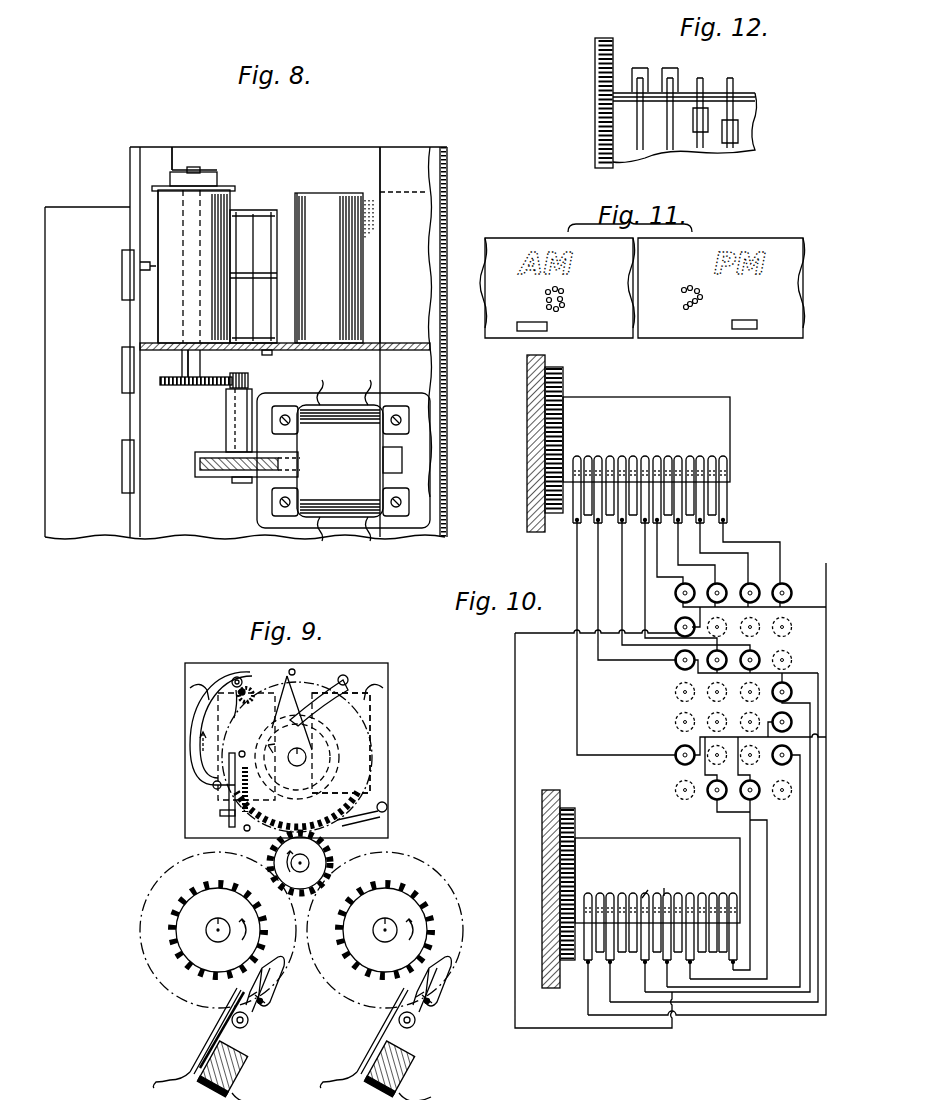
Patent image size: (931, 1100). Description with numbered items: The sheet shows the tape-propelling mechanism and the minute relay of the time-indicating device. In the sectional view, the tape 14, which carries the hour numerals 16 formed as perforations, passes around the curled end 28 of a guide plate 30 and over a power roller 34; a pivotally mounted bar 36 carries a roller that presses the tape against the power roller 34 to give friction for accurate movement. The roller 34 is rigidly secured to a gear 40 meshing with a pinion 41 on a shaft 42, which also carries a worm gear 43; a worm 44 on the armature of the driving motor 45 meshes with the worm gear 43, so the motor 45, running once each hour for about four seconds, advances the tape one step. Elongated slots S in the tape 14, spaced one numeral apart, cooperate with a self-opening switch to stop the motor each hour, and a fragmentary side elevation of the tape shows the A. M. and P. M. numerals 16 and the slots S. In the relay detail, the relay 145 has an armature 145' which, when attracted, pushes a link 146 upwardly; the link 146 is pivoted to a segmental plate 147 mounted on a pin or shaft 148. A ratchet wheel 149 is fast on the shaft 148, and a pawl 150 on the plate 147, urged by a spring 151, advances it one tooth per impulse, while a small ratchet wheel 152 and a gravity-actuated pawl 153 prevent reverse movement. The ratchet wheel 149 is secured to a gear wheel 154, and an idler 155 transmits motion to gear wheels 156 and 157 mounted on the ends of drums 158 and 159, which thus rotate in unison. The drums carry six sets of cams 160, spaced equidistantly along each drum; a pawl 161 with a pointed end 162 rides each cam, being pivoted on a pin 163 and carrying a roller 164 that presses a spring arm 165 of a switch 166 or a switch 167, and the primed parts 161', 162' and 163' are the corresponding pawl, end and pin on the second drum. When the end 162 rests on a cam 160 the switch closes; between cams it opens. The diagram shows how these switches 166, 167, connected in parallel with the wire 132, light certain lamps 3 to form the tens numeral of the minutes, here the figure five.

In FIG. 8, the tape 14 is at (158, 233).
In FIG. 11, the tape 14 is at (772, 242).
In FIG. 11, the numerals 16 is at (563, 298).
In FIG. 8, the curled end 28 is at (332, 202).
In FIG. 8, the guide plate 30 is at (381, 301).
In FIG. 8, the power roller 34 is at (160, 197).
In FIG. 8, the pivotally mounted bar 36 is at (217, 168).
In FIG. 8, the gear 40 is at (203, 386).
In FIG. 8, the pinion 41 is at (247, 384).
In FIG. 8, the shaft 42 is at (232, 427).
In FIG. 8, the worm gear 43 is at (210, 473).
In FIG. 8, the worm 44 is at (233, 483).
In FIG. 8, the driving motor 45 is at (343, 460).
In FIG. 10, the lamps 3 is at (666, 689).
In FIG. 10, the wire 132 is at (826, 568).
In FIG. 9, the relay 145 is at (368, 743).
In FIG. 9, the armature 145' is at (369, 806).
In FIG. 9, the link 146 is at (226, 807).
In FIG. 9, the segmental plate 147 is at (206, 768).
In FIG. 9, the pin or shaft 148 is at (307, 757).
In FIG. 9, the ratchet wheel 149 is at (314, 678).
In FIG. 9, the pawl 150 is at (236, 679).
In FIG. 9, the spring 151 is at (244, 683).
In FIG. 9, the small ratchet wheel 152 is at (330, 729).
In FIG. 9, the gravity-actuated pawl 153 is at (343, 680).
In FIG. 9, the gear wheel 154 is at (335, 822).
In FIG. 9, the idler 155 is at (331, 844).
In FIG. 9, the gear wheel 156 is at (308, 955).
In FIG. 10, the gear wheel 156 is at (561, 389).
In FIG. 12, the gear wheel 156 is at (596, 151).
In FIG. 9, the gear wheel 157 is at (343, 992).
In FIG. 10, the gear wheel 157 is at (577, 826).
In FIG. 9, the drum 158 is at (200, 946).
In FIG. 10, the drum 158 is at (644, 408).
In FIG. 12, the drum 158 is at (756, 129).
In FIG. 9, the drum 159 is at (423, 902).
In FIG. 10, the drum 159 is at (647, 848).
In FIG. 9, the cams 160 is at (180, 917).
In FIG. 10, the cams 160 is at (620, 462).
In FIG. 12, the cams 160 is at (670, 70).
In FIG. 9, the pawl 161 is at (280, 1000).
In FIG. 9, the spring 161' is at (446, 1001).
In FIG. 9, the pointed end 162 is at (267, 965).
In FIG. 9, the pawl 162' is at (451, 976).
In FIG. 9, the pin 163 is at (257, 1022).
In FIG. 9, the pivot 163' is at (431, 1022).
In FIG. 9, the roller 164 is at (232, 1030).
In FIG. 9, the spring arm 165 is at (216, 1034).
In FIG. 9, the switch 166 is at (218, 1019).
In FIG. 10, the switch 166 is at (610, 540).
In FIG. 9, the switch 167 is at (364, 1041).
In FIG. 10, the switch 167 is at (598, 978).
In FIG. 11, the slots S is at (525, 332).